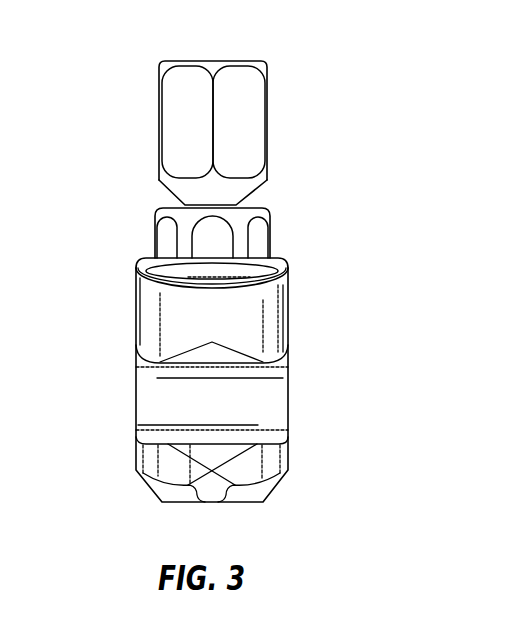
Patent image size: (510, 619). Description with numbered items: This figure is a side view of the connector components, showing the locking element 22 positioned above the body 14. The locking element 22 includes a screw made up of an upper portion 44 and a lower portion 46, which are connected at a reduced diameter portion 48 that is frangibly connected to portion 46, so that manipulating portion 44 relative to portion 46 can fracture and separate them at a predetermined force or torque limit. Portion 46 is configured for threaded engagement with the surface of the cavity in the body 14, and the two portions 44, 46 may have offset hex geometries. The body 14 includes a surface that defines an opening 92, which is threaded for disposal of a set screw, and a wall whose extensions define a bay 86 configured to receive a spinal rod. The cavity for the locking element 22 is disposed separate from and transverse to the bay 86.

The locking element 22 is at (330, 101).
The portion 44 is at (172, 123).
The reduced diameter portion 48 is at (242, 203).
The portion 46 is at (163, 240).
The body 14 is at (288, 317).
The opening 92 is at (253, 272).
The bay 86 is at (255, 402).